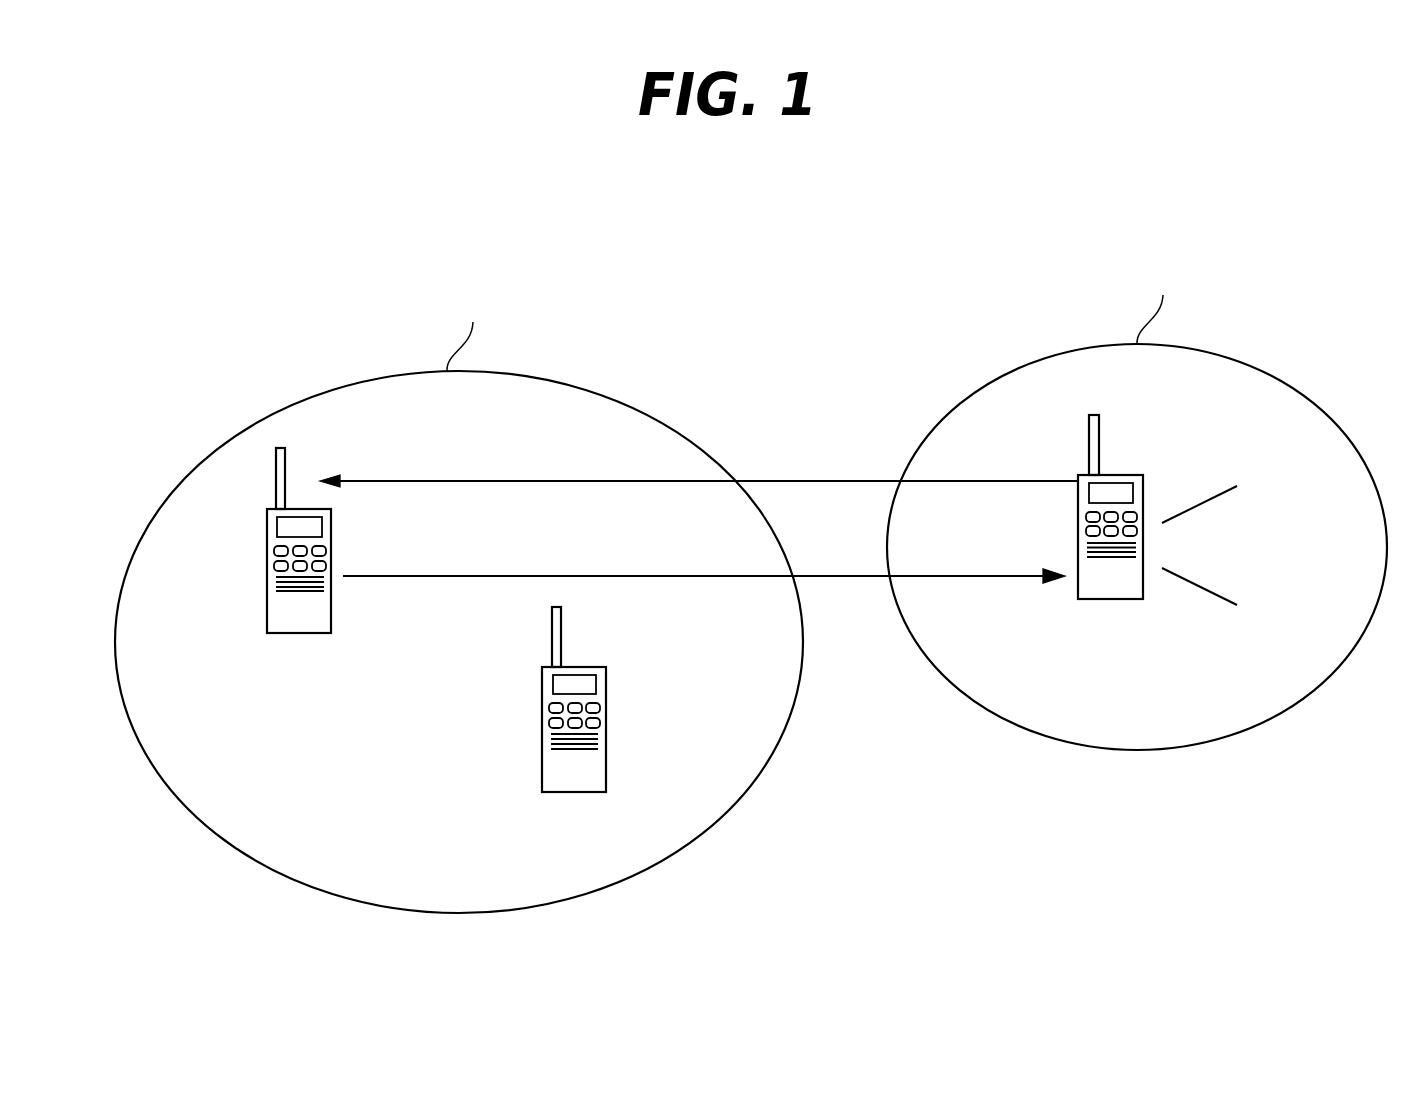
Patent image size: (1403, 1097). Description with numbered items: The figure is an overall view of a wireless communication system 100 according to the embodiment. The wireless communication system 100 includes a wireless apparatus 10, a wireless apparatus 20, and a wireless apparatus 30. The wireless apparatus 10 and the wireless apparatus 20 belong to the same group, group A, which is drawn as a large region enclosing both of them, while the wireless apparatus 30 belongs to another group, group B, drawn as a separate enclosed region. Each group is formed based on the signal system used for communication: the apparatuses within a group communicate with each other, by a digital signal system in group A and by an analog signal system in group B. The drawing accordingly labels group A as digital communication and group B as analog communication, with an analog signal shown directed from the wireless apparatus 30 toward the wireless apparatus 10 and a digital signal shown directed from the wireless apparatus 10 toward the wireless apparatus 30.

The wireless communication system 100 is at (813, 267).
The wireless apparatus 10 is at (302, 578).
The wireless apparatus 20 is at (565, 733).
The wireless apparatus 30 is at (1114, 544).